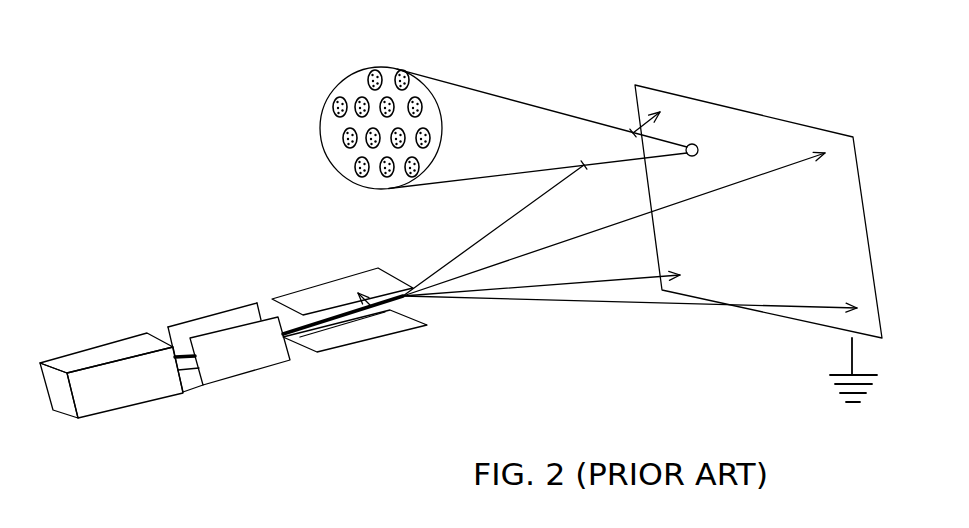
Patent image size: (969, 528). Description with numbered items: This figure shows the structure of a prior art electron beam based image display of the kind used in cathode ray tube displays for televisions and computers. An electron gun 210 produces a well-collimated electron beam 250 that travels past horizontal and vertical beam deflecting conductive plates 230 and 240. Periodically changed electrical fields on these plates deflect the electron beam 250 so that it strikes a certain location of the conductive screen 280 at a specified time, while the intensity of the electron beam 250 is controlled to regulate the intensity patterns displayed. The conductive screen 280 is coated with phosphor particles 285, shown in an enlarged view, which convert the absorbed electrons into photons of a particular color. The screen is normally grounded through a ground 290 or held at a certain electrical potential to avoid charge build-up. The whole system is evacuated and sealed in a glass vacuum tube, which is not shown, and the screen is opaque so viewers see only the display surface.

The electron gun 210 is at (111, 366).
The horizontal beam deflecting conductive plate 230 is at (233, 338).
The vertical beam deflecting conductive plate 240 is at (347, 340).
The electron beam 250 is at (293, 331).
The conductive screen 280 is at (635, 203).
The phosphor particles 285 is at (360, 102).
The ground 290 is at (832, 370).